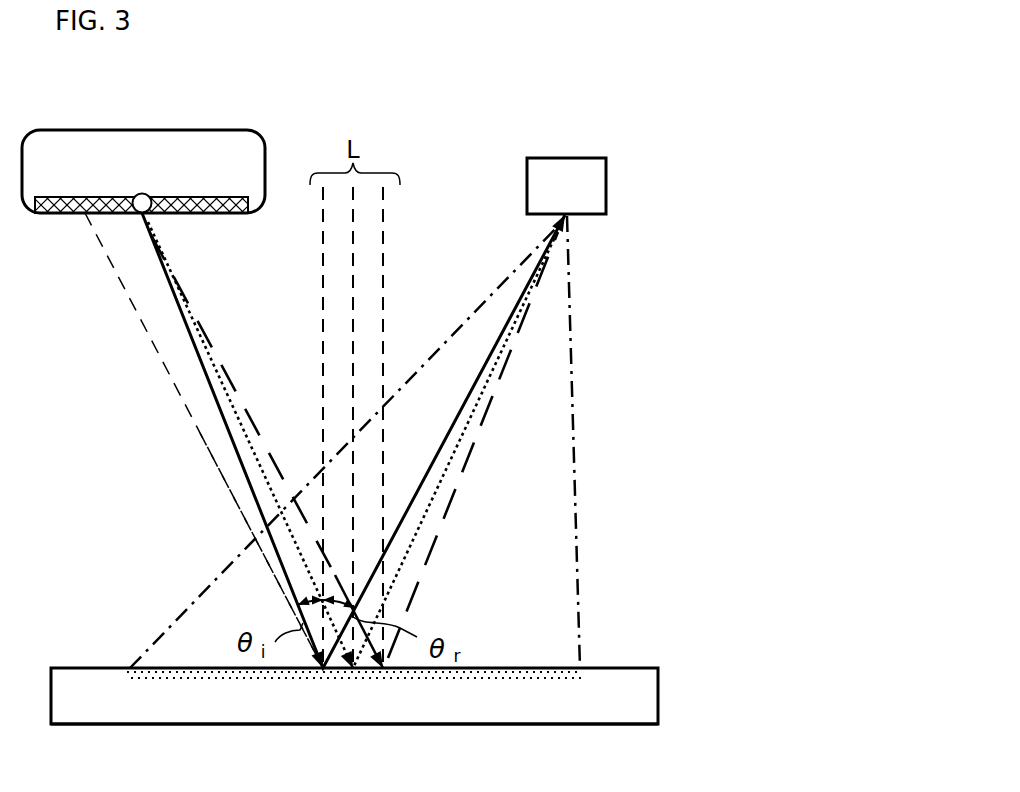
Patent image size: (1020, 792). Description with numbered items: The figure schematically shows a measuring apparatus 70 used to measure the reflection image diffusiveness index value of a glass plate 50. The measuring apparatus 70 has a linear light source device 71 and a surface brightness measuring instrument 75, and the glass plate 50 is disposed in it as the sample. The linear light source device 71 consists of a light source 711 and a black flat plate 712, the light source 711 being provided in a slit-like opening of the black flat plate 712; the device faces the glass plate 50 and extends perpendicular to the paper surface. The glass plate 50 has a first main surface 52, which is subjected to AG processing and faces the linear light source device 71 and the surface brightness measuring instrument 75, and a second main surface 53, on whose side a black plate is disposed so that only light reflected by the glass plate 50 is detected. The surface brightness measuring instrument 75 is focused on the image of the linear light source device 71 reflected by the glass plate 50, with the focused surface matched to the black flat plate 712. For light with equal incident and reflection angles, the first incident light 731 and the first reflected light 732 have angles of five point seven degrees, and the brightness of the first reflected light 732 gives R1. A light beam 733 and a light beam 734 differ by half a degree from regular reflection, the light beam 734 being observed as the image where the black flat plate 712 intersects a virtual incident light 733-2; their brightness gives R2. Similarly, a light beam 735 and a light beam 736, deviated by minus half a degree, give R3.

The measuring apparatus 70 is at (630, 100).
The linear light source device 71 is at (248, 146).
The light source 711 is at (142, 194).
The black flat plate 712 is at (88, 202).
The surface brightness measuring instrument 75 is at (596, 178).
The first incident light 731 is at (242, 427).
The first reflected light 732 is at (415, 540).
The light beam 733 is at (203, 366).
The virtual incident light 733-2 is at (217, 467).
The light beam 734 is at (522, 297).
The light beam 735 is at (235, 377).
The light beam 736 is at (457, 493).
The glass plate 50 is at (659, 694).
The first main surface 52 is at (628, 668).
The second main surface 53 is at (630, 724).